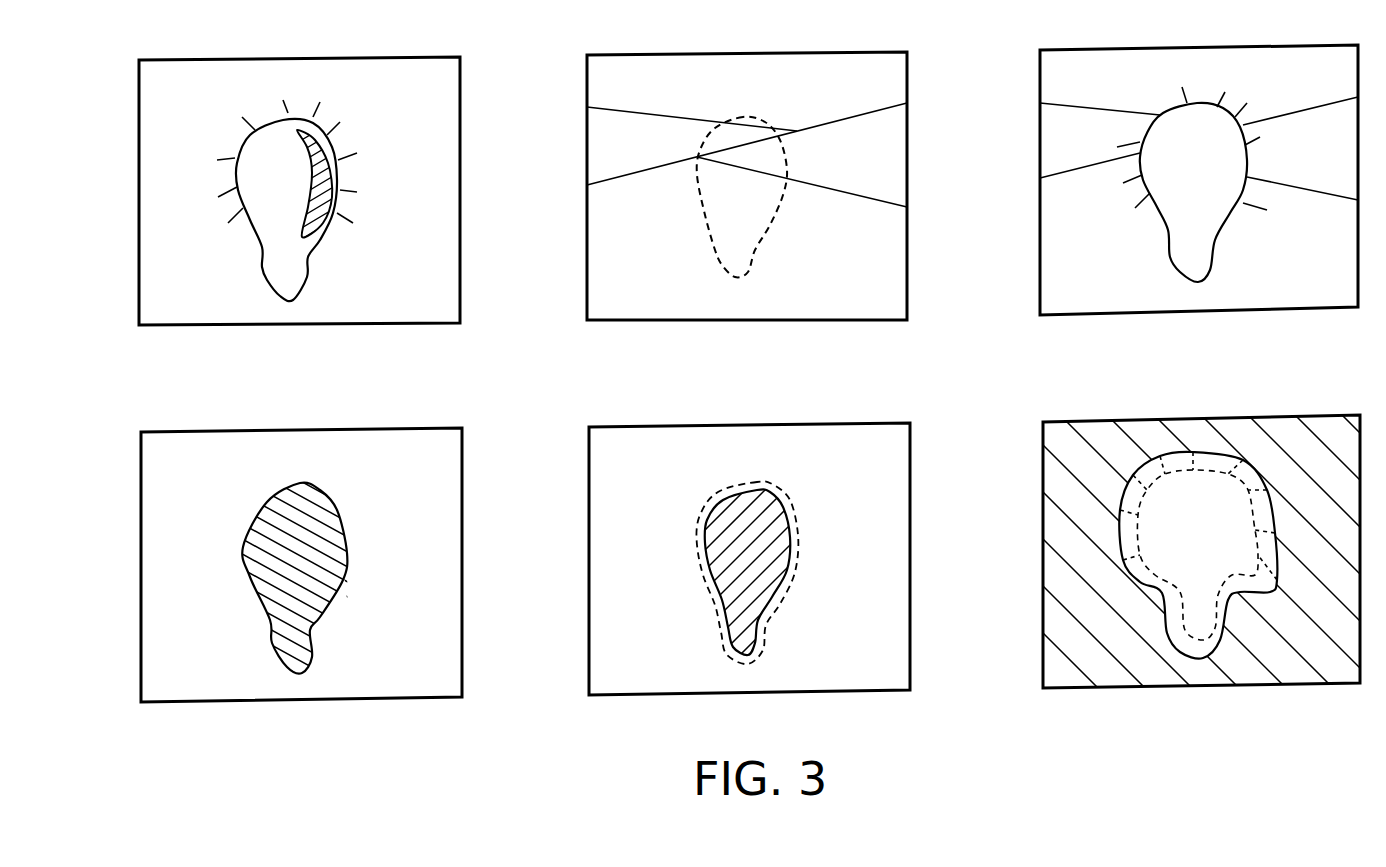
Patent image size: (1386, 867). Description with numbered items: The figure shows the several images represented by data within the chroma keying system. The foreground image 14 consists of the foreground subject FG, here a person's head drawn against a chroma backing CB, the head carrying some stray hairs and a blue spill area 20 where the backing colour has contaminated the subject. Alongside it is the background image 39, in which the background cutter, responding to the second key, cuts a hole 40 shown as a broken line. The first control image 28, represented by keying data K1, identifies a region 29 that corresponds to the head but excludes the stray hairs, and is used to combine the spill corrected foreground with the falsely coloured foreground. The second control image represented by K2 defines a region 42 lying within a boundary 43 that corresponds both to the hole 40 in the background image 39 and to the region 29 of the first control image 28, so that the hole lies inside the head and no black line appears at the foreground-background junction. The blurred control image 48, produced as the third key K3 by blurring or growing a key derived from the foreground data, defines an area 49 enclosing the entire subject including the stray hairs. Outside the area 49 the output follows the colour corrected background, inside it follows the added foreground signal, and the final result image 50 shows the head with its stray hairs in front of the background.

The foreground image 14 is at (139, 150).
The blue spill area 20 is at (310, 237).
The hole 40 is at (737, 280).
The result image 50 is at (1040, 82).
The control image 28 is at (141, 514).
The region 29 is at (292, 648).
The background image 39 is at (589, 507).
The region 42 is at (747, 640).
The boundary 43 is at (797, 522).
The blurred control image 48 is at (1043, 520).
The area 49 is at (1197, 633).